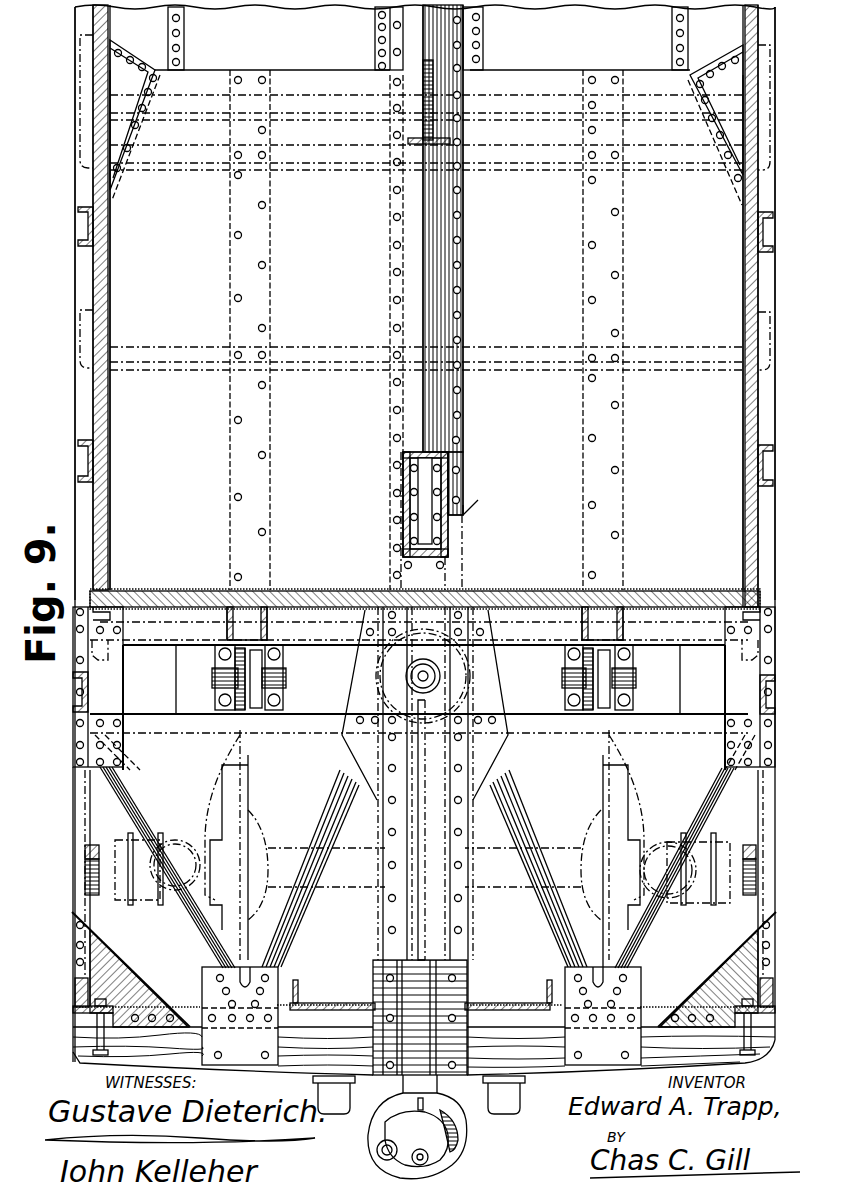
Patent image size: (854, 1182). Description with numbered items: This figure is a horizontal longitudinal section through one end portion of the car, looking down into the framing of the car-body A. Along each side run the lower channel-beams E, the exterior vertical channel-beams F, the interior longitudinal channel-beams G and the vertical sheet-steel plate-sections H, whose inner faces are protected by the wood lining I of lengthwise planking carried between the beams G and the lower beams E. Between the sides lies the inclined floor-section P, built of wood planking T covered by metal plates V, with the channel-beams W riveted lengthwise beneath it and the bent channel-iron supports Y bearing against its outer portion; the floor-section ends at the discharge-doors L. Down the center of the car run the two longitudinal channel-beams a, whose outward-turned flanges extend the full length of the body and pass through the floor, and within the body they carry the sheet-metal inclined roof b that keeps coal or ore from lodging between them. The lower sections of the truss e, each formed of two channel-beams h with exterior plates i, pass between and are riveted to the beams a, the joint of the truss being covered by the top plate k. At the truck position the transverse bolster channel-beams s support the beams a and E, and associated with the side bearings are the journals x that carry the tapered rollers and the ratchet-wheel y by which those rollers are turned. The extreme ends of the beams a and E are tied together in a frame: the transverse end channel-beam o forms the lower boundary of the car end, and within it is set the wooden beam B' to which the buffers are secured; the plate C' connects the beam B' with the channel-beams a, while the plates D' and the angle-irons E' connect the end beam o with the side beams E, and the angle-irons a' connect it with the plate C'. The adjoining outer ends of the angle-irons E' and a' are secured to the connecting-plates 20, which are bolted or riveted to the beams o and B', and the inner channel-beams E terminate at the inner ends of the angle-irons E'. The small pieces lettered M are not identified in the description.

The car-body A is at (398, 209).
The wooden beam B' is at (433, 1127).
The plate C' is at (424, 1006).
The plates D' is at (424, 914).
The lower channel-beams E is at (419, 303).
The angle-irons E' is at (424, 787).
The exterior vertical channel-beams F is at (88, 232).
The interior longitudinal channel-beams G is at (110, 460).
The vertical metal plate-sections H is at (93, 180).
The wood lining I is at (110, 262).
The discharge-doors L is at (660, 178).
The clip angle M is at (80, 1015).
The floor-section P is at (462, 332).
The wood planking T is at (533, 590).
The metal plates V is at (553, 590).
The channel-beams W is at (268, 432).
The bent channel-iron supports Y is at (523, 841).
The channel-beams a is at (422, 521).
The angle-irons a' is at (424, 848).
The inclined roof b is at (425, 138).
The truss e is at (403, 478).
The channel-beams h is at (400, 510).
The exterior plates i is at (412, 566).
The top plate k is at (105, 608).
The transverse end channel-beam o is at (340, 1003).
The bolster channel-beams s is at (515, 590).
The journals x is at (283, 678).
The ratchet-wheel y is at (240, 680).
The connecting-plates 20 is at (203, 998).